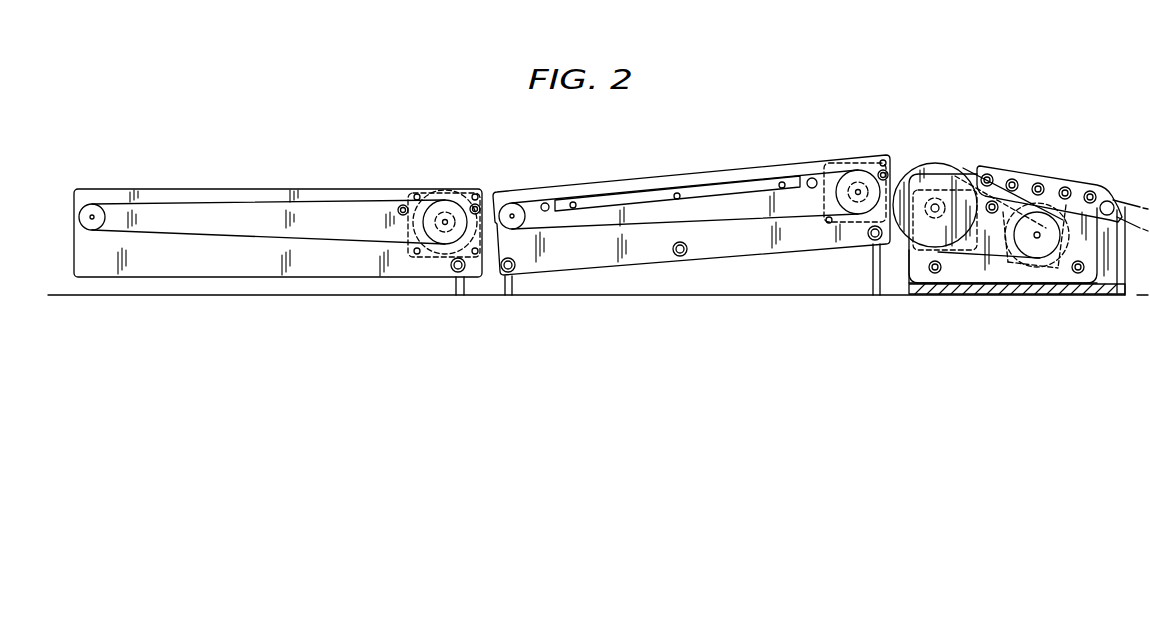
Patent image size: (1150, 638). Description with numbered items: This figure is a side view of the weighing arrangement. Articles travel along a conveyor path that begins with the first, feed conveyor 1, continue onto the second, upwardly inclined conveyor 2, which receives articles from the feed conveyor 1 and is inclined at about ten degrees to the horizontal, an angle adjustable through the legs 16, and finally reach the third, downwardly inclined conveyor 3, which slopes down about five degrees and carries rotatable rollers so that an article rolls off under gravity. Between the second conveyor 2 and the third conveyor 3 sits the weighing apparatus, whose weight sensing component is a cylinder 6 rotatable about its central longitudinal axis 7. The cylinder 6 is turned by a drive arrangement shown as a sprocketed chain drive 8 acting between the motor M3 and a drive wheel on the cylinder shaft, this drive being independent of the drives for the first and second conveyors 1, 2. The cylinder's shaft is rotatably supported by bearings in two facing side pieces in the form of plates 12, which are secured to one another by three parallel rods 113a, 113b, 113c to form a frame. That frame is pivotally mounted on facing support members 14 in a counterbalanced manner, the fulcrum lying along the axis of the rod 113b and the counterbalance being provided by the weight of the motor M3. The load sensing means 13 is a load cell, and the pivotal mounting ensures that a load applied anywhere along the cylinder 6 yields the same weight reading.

The feed conveyor 1 is at (180, 178).
The upwardly inclined conveyor 2 is at (666, 170).
The downwardly inclined conveyor 3 is at (1062, 184).
The cylinder 6 is at (936, 164).
The central longitudinal axis 7 is at (932, 204).
The sprocketed chain drive 8 is at (985, 248).
The plates 12 is at (977, 276).
The load sensing means 13 is at (938, 284).
The support plate 14 is at (1117, 280).
The legs 16 is at (872, 263).
The third motor M3 is at (1045, 248).
The parallel rod 113a is at (934, 274).
The parallel rod 113b is at (992, 201).
The parallel rod 113c is at (1078, 274).